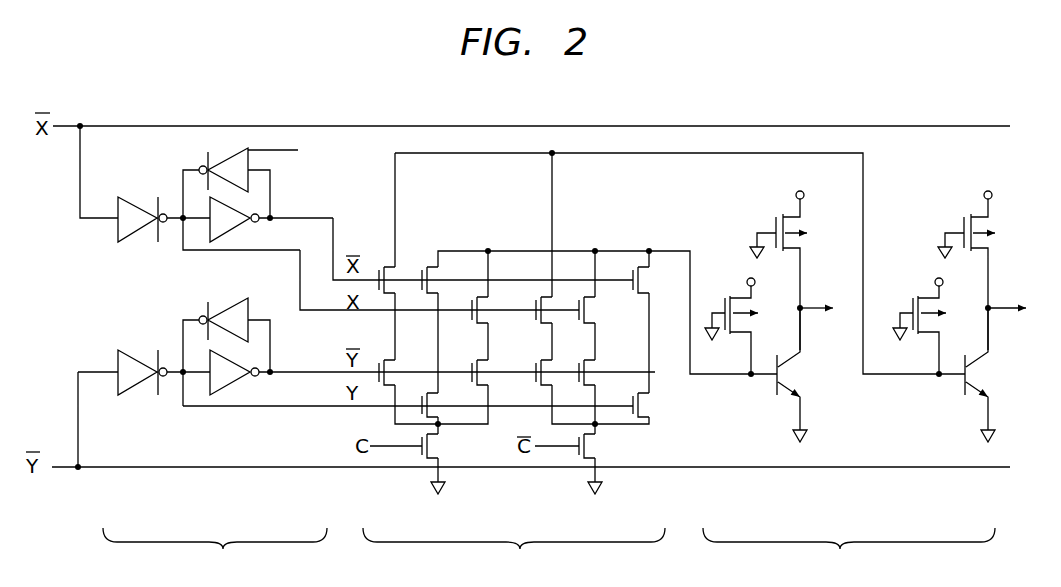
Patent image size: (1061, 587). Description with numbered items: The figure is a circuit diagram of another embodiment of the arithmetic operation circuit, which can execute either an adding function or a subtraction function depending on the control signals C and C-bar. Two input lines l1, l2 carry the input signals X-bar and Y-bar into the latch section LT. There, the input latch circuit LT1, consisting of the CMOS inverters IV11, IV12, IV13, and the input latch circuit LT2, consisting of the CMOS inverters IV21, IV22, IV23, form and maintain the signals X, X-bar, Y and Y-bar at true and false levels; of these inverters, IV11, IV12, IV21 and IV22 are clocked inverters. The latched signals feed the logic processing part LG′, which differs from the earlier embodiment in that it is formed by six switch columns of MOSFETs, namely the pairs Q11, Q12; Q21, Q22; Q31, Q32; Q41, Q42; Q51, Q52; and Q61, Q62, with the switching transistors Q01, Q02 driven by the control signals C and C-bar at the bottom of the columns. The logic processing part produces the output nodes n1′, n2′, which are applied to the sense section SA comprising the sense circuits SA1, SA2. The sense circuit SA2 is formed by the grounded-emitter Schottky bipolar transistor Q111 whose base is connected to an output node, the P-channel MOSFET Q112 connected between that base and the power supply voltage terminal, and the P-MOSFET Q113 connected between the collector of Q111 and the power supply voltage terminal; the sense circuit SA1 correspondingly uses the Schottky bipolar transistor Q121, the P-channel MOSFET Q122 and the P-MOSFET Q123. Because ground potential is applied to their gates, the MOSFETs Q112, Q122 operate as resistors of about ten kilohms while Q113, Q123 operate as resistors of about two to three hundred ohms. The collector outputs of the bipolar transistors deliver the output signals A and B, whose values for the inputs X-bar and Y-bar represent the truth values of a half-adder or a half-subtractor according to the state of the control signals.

The first input line l1 is at (176, 126).
The second input line l2 is at (213, 467).
The CMOS inverter IV11 is at (137, 197).
The CMOS inverter IV12 is at (268, 169).
The CMOS inverter IV13 is at (246, 228).
The CMOS inverter IV21 is at (137, 394).
The CMOS inverter IV22 is at (228, 303).
The CMOS inverter IV23 is at (232, 380).
The input latch circuit LT1 is at (333, 206).
The input latch circuit LT2 is at (322, 362).
The latch section LT is at (215, 554).
The logic processing part LG′ is at (514, 555).
The sense amplifier section SA is at (849, 555).
The sense circuit SA1 is at (778, 303).
The sense circuit SA2 is at (970, 303).
The output node n1′ is at (548, 157).
The output node n2′ is at (650, 249).
The clock transistor Q01 is at (448, 448).
The clock transistor Q02 is at (604, 448).
The switch column transistor Q11 is at (405, 290).
The switch column transistor Q12 is at (405, 366).
The switch column transistor Q21 is at (440, 272).
The switch column transistor Q22 is at (449, 399).
The switch column transistor Q31 is at (499, 305).
The switch column transistor Q32 is at (499, 365).
The switch column transistor Q41 is at (554, 300).
The switch column transistor Q42 is at (562, 362).
The switch column transistor Q51 is at (605, 305).
The switch column transistor Q52 is at (606, 366).
The switch column transistor Q61 is at (661, 288).
The switch column transistor Q62 is at (661, 401).
The Schottky bipolar transistor Q111 is at (995, 375).
The P-channel MOSFET Q112 is at (938, 323).
The P-MOSFET Q113 is at (987, 257).
The Schottky bipolar transistor Q121 is at (807, 375).
The P-channel MOSFET Q122 is at (750, 323).
The P-MOSFET Q123 is at (799, 257).